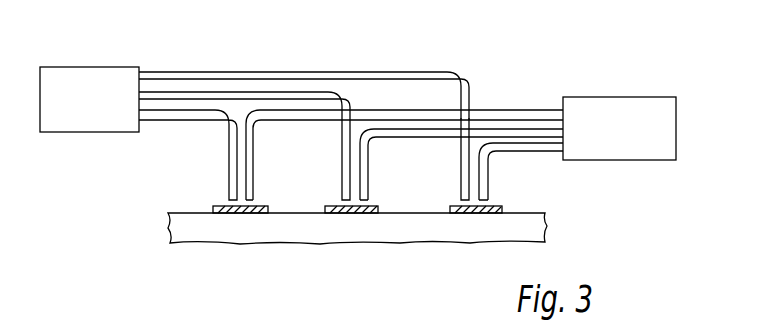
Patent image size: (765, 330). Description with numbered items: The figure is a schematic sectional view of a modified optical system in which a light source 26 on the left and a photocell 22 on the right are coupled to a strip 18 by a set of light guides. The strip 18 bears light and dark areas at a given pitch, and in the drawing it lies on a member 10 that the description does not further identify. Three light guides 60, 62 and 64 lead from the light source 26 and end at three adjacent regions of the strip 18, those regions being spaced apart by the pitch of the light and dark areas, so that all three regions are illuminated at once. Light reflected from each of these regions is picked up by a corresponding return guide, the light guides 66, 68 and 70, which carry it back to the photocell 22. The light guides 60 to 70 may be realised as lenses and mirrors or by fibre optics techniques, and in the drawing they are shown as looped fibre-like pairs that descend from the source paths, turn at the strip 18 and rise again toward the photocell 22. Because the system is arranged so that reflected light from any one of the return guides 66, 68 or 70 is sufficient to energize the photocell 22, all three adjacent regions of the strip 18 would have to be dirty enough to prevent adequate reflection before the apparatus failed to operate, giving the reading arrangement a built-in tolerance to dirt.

The substrate 10 is at (546, 231).
The strip 18 is at (181, 213).
The photocell 22 is at (657, 97).
The light source 26 is at (109, 67).
The light guide 60 is at (196, 120).
The light guide 62 is at (342, 153).
The light guide 64 is at (461, 162).
The light guide 66 is at (416, 108).
The light guide 68 is at (364, 166).
The light guide 70 is at (489, 165).